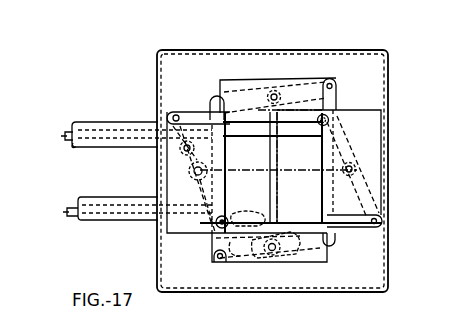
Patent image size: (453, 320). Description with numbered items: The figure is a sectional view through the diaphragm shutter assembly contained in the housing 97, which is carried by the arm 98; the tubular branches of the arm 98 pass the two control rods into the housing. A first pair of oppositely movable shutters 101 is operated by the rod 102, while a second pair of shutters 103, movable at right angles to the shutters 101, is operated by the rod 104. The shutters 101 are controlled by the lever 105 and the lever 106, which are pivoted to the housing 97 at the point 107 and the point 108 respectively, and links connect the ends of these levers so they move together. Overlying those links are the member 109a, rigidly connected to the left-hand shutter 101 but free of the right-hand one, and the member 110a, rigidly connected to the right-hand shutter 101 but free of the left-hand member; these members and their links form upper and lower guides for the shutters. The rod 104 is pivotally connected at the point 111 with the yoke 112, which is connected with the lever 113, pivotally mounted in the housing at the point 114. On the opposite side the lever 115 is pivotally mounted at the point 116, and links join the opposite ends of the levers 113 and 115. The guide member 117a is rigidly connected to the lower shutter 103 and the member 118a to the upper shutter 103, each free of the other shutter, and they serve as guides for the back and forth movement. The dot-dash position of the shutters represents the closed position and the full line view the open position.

The housing 97 is at (312, 50).
The arm 98 is at (105, 124).
The shutters 101 is at (371, 116).
The rod 102 is at (68, 131).
The shutters 103 is at (227, 79).
The rod 104 is at (70, 218).
The lever 105 is at (200, 192).
The lever 106 is at (359, 192).
The pivot point 107 is at (192, 172).
The pivot point 108 is at (355, 168).
The member 109a is at (194, 119).
The member 110a is at (354, 228).
The pivotal connection 111 is at (279, 208).
The yoke 112 is at (286, 258).
The lever 113 is at (246, 258).
The pivot point 114 is at (272, 258).
The lever 115 is at (298, 83).
The pivot point 116 is at (271, 90).
The guide member 117a is at (214, 242).
The member 118a is at (333, 100).